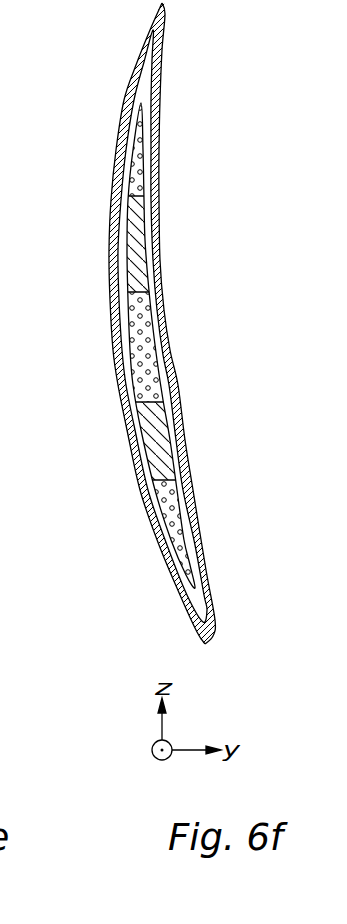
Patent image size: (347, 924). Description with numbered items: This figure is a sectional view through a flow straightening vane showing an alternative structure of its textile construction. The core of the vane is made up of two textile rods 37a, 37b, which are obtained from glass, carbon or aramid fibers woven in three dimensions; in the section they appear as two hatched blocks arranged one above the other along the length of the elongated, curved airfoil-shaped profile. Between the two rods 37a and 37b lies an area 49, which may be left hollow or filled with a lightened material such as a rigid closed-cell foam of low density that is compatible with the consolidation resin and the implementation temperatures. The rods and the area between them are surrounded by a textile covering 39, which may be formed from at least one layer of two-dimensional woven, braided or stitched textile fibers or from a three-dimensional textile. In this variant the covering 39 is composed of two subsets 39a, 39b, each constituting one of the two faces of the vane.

The textile covering 39 is at (173, 578).
The first covering subset 39a is at (109, 313).
The second covering subset 39b is at (180, 407).
The area between the rods 49 is at (137, 363).
The first textile rod 37a is at (148, 438).
The second textile rod 37b is at (137, 219).